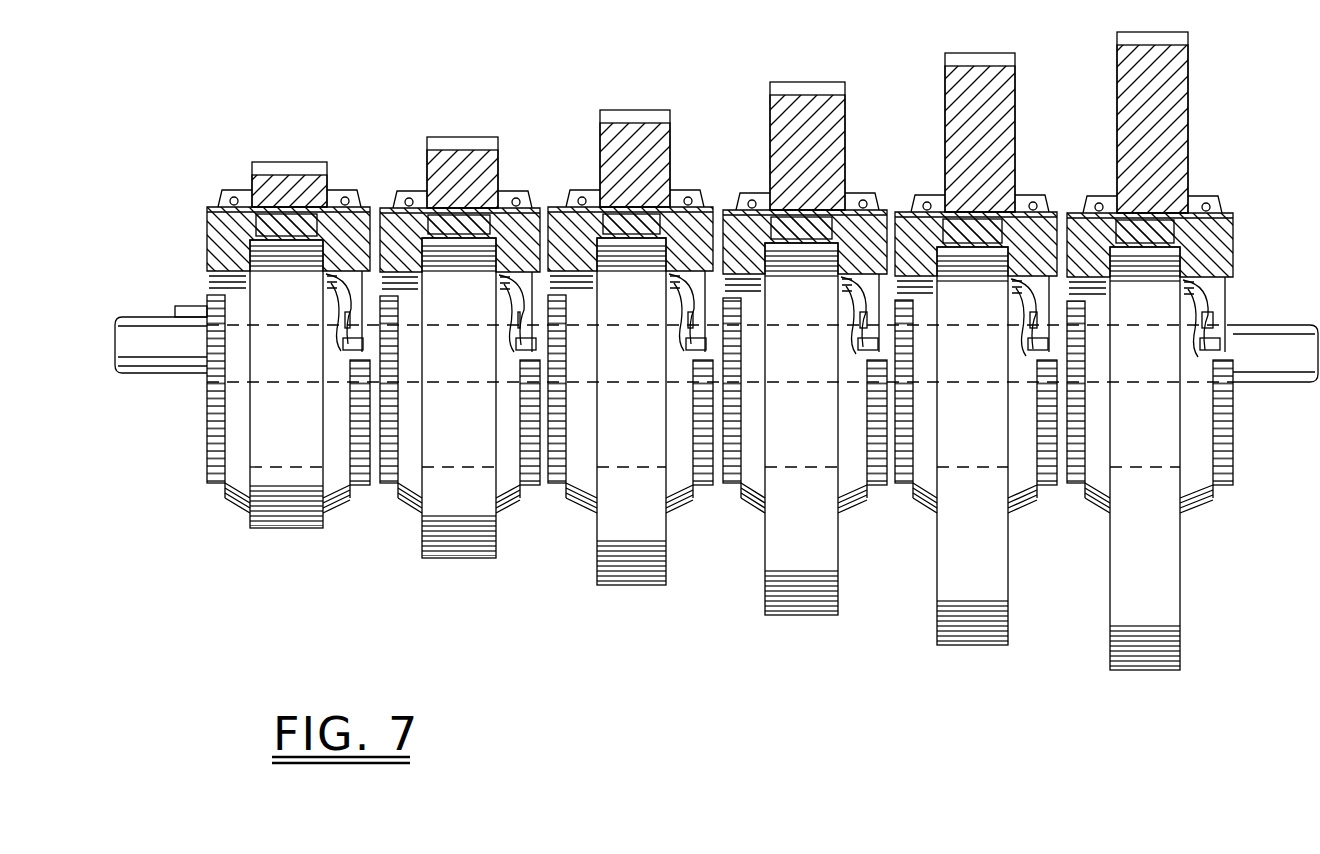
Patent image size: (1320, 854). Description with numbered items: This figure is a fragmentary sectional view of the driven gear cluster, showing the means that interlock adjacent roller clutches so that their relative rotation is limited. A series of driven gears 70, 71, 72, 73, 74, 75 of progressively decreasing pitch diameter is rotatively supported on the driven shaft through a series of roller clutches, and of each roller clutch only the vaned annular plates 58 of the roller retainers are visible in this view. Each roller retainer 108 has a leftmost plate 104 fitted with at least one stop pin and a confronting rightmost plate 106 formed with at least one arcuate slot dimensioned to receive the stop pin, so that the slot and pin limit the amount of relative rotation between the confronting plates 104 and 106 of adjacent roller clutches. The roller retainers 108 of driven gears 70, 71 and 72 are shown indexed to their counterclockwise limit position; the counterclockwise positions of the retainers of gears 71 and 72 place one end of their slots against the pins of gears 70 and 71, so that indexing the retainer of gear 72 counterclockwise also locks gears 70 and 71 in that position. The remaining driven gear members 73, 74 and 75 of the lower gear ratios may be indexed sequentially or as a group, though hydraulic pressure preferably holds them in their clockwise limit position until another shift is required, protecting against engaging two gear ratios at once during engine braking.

The driven gear 70 is at (1127, 421).
The driven gear 71 is at (954, 421).
The driven gear 72 is at (783, 421).
The driven gear member 73 is at (613, 421).
The driven gear member 74 is at (441, 421).
The driven gear member 75 is at (268, 421).
The annular plates 58 is at (728, 487).
The leftmost plate 104 is at (567, 232).
The rightmost plate 106 is at (713, 212).
The roller retainer 108 is at (858, 511).